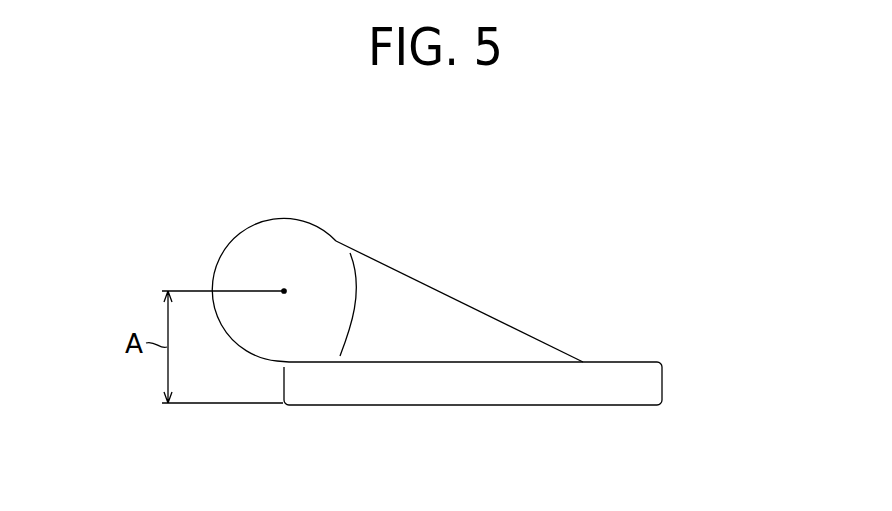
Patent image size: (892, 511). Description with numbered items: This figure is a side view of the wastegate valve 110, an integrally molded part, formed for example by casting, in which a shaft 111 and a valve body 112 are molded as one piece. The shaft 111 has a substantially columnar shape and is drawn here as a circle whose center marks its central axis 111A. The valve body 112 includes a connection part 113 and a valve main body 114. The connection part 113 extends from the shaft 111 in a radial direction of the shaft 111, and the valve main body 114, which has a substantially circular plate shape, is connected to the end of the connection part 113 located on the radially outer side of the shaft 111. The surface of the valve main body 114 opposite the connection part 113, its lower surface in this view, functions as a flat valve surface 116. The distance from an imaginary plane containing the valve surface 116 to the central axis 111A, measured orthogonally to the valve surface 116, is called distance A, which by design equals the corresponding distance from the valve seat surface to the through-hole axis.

The wastegate valve 110 is at (210, 193).
The shaft 111 is at (225, 252).
The central axis of the shaft 111A is at (283, 288).
The valve body 112 is at (510, 384).
The connection part 113 is at (430, 285).
The valve main body 114 is at (625, 360).
The valve surface 116 is at (543, 405).